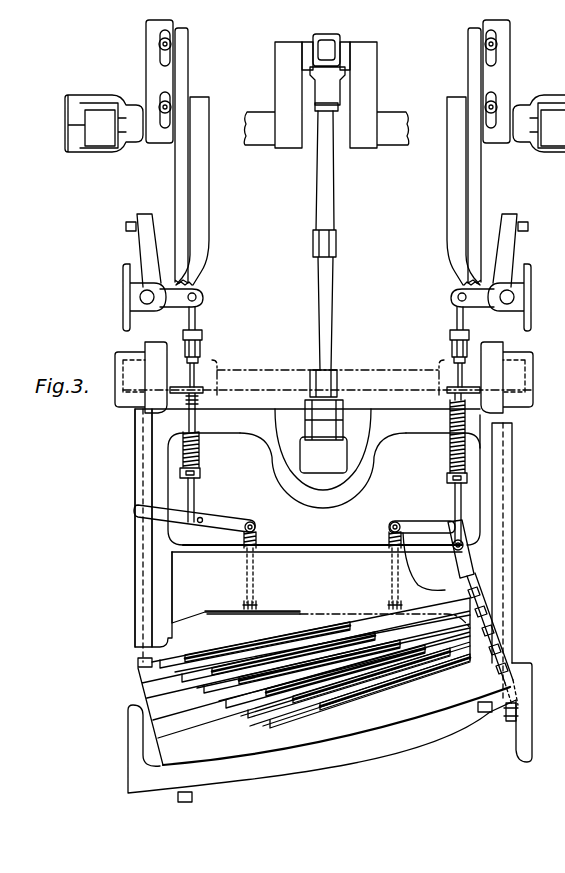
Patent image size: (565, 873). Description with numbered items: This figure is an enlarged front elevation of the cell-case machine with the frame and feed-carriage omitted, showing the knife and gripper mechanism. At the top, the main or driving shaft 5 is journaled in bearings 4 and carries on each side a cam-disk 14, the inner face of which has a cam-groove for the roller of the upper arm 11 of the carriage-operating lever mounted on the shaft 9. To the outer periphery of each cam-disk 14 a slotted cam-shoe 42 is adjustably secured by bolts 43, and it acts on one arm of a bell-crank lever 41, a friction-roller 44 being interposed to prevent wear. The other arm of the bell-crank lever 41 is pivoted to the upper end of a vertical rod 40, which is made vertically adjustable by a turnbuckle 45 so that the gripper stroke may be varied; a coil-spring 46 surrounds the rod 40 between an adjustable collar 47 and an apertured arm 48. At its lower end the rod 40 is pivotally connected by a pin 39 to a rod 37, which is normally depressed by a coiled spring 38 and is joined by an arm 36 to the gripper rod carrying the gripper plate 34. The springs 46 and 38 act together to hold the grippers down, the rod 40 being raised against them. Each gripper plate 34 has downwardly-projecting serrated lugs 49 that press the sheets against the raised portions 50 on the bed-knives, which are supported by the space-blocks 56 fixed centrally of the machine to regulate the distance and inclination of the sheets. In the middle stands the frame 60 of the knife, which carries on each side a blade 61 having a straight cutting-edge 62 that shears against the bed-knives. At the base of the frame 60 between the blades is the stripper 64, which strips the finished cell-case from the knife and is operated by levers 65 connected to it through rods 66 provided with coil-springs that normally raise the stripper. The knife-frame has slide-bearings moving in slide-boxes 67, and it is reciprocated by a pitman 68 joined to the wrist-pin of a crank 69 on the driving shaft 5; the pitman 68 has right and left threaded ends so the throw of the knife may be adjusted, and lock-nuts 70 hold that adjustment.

The bearings 4 is at (315, 116).
The main or driving shaft 5 is at (326, 95).
The shafts 9 is at (324, 521).
The upper arm 11 is at (328, 191).
The cam-disk 14 is at (470, 84).
The plate 34 is at (385, 706).
The arm 36 is at (480, 580).
The rod 37 is at (472, 565).
The coiled spring 38 is at (505, 716).
The pin 39 is at (464, 545).
The vertical rod 40 is at (195, 500).
The bell-crank lever 41 is at (515, 260).
The slotted cam-shoe 42 is at (516, 80).
The bolts 43 is at (159, 46).
The friction-roller 44 is at (126, 228).
The turnbuckle 45 is at (201, 343).
The coil-spring 46 is at (449, 455).
The adjustable collar 47 is at (446, 480).
The apertured arm 48 is at (325, 390).
The downwardly-projecting lugs 49 is at (350, 716).
The raised portions 50 is at (418, 695).
The space-blocks 56 is at (330, 700).
The frame of the knife 60 is at (323, 461).
The blade 61 is at (236, 587).
The straight cutting-edge 62 is at (337, 623).
The stripper 64 is at (259, 605).
The levers 65 is at (294, 517).
The rods 66 is at (256, 568).
The slide-boxes 67 is at (148, 560).
The pitman 68 is at (336, 240).
The crank 69 is at (333, 67).
The lock-nuts 70 is at (320, 114).